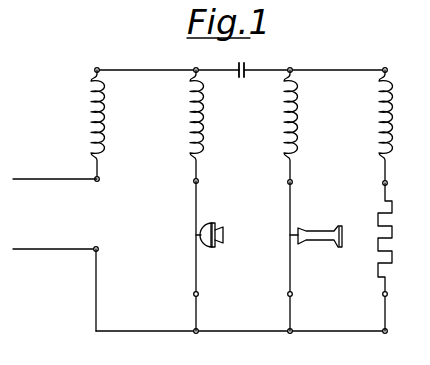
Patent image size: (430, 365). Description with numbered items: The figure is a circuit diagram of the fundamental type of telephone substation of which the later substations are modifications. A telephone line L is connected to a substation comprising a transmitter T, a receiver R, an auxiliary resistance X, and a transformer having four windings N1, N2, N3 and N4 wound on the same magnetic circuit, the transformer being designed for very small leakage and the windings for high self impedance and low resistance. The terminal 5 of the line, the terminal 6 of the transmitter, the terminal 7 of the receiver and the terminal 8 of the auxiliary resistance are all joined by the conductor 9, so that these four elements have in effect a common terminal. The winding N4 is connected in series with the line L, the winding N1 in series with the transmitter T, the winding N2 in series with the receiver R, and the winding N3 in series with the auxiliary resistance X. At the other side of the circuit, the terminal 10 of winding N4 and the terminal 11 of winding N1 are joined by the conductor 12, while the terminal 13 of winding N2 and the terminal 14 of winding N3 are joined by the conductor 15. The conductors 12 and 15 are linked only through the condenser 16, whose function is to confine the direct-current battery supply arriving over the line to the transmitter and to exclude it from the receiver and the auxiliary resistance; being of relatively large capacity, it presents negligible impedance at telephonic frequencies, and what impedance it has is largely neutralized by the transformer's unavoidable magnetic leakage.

The terminal 5 is at (98, 250).
The terminal 6 is at (199, 294).
The terminal 7 is at (293, 294).
The terminal 8 is at (388, 294).
The conductor 9 is at (248, 334).
The terminal 10 is at (98, 67).
The terminal 11 is at (199, 67).
The conductor 12 is at (149, 69).
The terminal 13 is at (304, 67).
The terminal 14 is at (396, 60).
The conductor 15 is at (353, 69).
The condenser 16 is at (264, 63).
The winding N1 is at (206, 126).
The winding N2 is at (300, 127).
The winding N3 is at (395, 127).
The winding N4 is at (107, 125).
The transmitter T is at (227, 227).
The receiver R is at (314, 229).
The auxiliary resistance X is at (396, 238).
The telephone line L is at (54, 214).